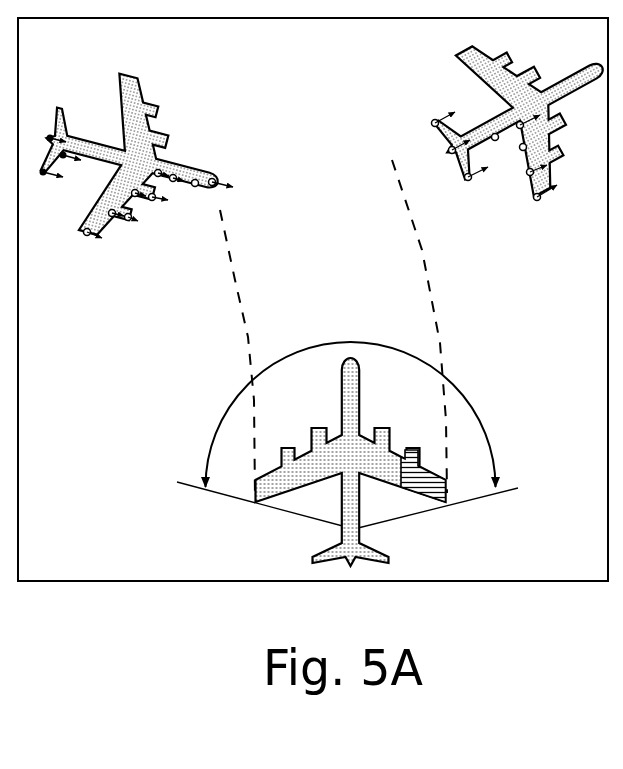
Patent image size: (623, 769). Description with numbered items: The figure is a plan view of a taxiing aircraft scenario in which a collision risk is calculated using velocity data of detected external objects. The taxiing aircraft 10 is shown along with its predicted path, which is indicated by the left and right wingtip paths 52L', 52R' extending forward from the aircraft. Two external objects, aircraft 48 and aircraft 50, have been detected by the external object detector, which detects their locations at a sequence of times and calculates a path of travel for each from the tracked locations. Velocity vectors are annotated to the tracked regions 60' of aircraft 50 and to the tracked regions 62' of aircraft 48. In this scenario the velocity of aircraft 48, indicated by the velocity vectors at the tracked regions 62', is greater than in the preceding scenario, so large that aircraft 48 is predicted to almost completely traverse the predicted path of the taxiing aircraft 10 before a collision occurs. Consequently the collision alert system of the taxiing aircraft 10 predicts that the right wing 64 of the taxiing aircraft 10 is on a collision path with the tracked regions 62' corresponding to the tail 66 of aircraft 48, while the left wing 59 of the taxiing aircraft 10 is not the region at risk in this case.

The taxiing aircraft 10 is at (389, 408).
The aircraft 48 is at (196, 148).
The aircraft 50 is at (469, 90).
The wingtip path 52L' is at (259, 353).
The wingtip path 52R' is at (392, 326).
The left wing 59 is at (250, 511).
The tracked regions 60' is at (495, 182).
The tracked regions 62' is at (133, 161).
The right wing 64 is at (432, 493).
The tail 66 is at (48, 184).